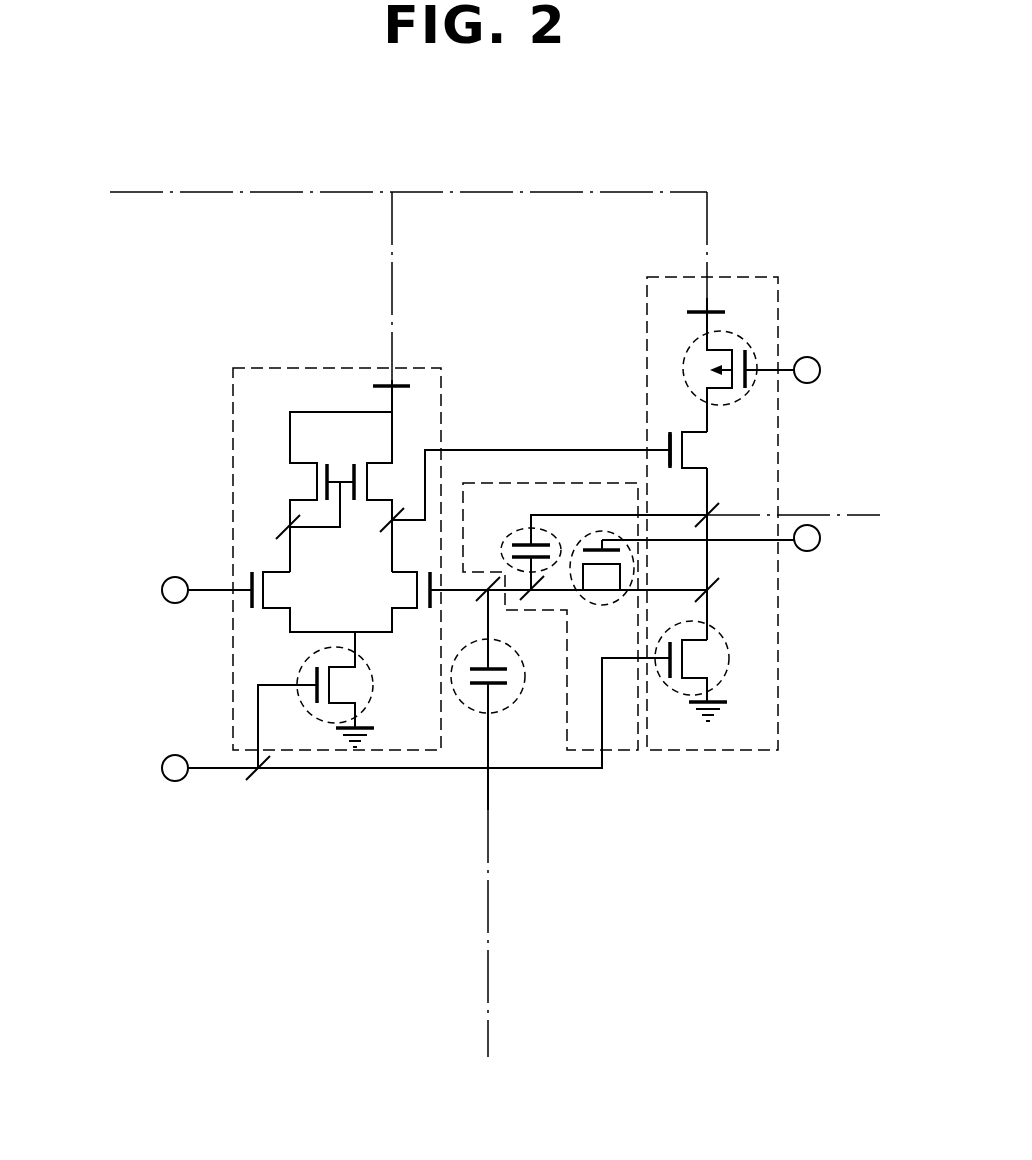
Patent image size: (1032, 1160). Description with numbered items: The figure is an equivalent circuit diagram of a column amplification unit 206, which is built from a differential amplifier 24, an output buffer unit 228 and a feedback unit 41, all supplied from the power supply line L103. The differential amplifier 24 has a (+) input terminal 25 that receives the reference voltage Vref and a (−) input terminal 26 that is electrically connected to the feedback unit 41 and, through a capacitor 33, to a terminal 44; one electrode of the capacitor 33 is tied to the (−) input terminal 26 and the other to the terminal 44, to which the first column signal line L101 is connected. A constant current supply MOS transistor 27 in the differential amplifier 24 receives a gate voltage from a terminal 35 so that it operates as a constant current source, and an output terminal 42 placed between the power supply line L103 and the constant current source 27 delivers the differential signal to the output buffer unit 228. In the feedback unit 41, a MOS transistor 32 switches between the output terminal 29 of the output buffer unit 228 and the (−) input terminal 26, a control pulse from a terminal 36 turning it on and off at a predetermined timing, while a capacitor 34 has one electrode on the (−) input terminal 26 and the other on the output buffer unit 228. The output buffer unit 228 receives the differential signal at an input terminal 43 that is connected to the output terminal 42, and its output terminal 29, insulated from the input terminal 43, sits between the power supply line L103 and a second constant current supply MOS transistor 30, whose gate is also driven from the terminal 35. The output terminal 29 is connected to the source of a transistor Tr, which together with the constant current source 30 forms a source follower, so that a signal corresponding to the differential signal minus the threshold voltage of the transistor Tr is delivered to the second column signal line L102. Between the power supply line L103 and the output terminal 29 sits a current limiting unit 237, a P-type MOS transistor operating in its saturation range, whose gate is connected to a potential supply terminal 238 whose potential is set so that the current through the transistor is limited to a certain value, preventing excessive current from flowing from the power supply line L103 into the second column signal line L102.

The differential amplifier 24 is at (233, 462).
The (+) input terminal 25 is at (162, 590).
The (−) input terminal 26 is at (478, 593).
The constant current supply MOS transistor 27 is at (373, 685).
The output terminal 29 is at (707, 488).
The constant current supply MOS transistor 30 is at (722, 640).
The MOS transistor 32 is at (628, 605).
The capacitor 33 is at (510, 705).
The capacitor 34 is at (514, 532).
The terminal 35 is at (162, 768).
The terminal 36 is at (806, 552).
The feedback unit 41 is at (535, 483).
The output terminal 42 is at (425, 436).
The input terminal 43 is at (658, 436).
The terminal 44 is at (471, 785).
The column amplification unit 206 is at (328, 1028).
The output buffer unit 228 is at (778, 470).
The current limiting unit 237 is at (736, 336).
The potential supply terminal 238 is at (820, 368).
The transistor Tr is at (723, 446).
The first column signal line L101 is at (510, 970).
The second column signal line L102 is at (860, 534).
The power supply line L103 is at (144, 216).